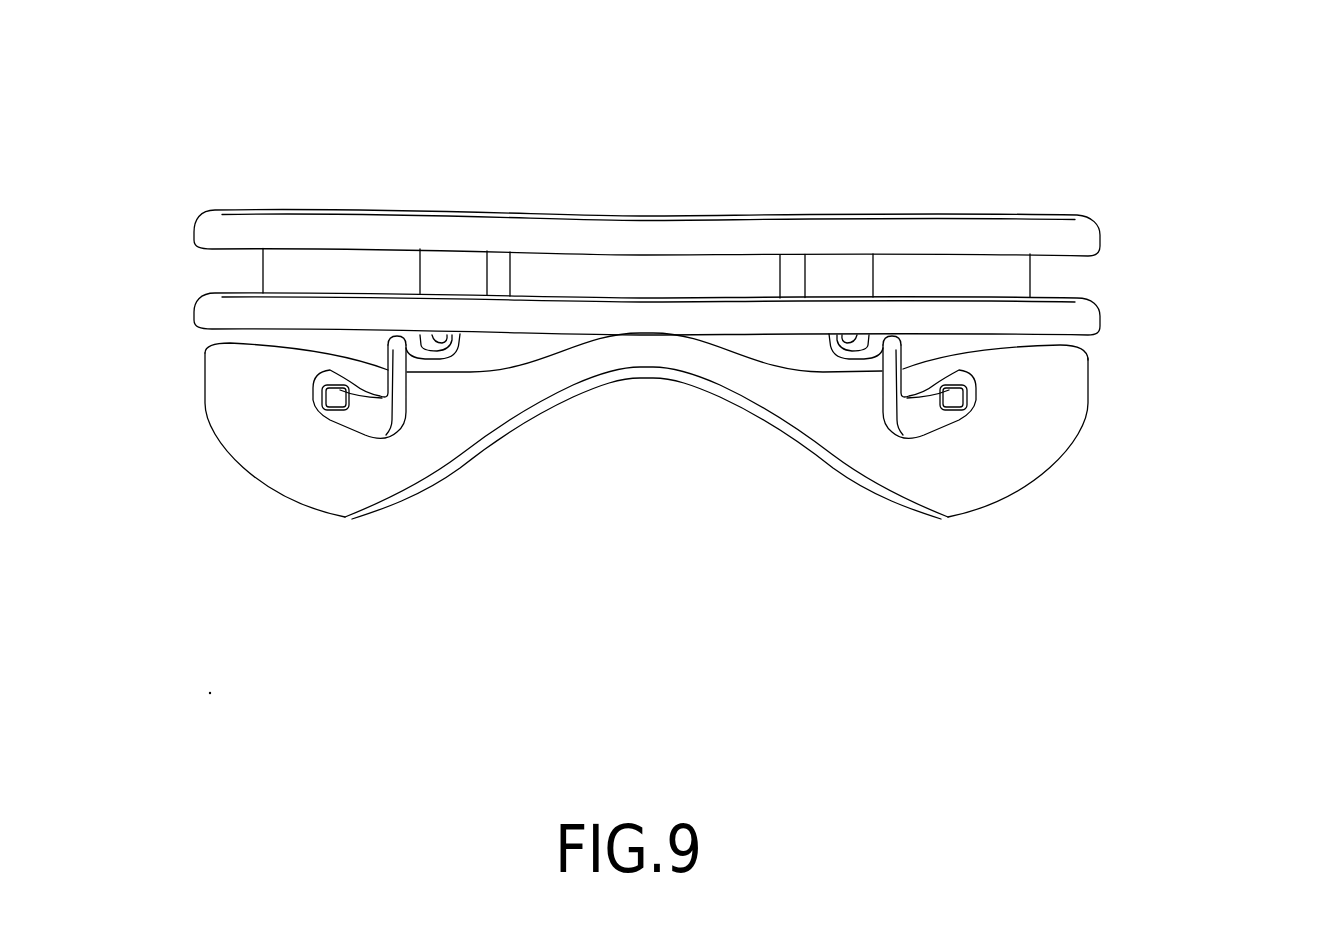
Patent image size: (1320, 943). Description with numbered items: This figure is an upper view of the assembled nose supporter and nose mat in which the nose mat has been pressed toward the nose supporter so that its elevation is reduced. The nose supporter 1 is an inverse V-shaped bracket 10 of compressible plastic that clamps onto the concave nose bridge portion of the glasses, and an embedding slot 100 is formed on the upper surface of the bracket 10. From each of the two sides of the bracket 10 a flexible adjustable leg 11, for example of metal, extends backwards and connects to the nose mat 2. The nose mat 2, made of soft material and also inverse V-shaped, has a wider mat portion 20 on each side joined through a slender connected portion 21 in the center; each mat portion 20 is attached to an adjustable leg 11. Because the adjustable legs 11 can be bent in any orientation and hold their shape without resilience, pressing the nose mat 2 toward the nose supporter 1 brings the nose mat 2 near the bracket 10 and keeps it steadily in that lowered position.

The nose supporter 1 is at (1128, 257).
The bracket 10 is at (737, 242).
The embedding slot 100 is at (578, 282).
The nose mat 2 is at (1133, 465).
The mat portion 20 is at (288, 441).
The connected portion 21 is at (640, 353).
The adjustable leg 11 is at (393, 377).